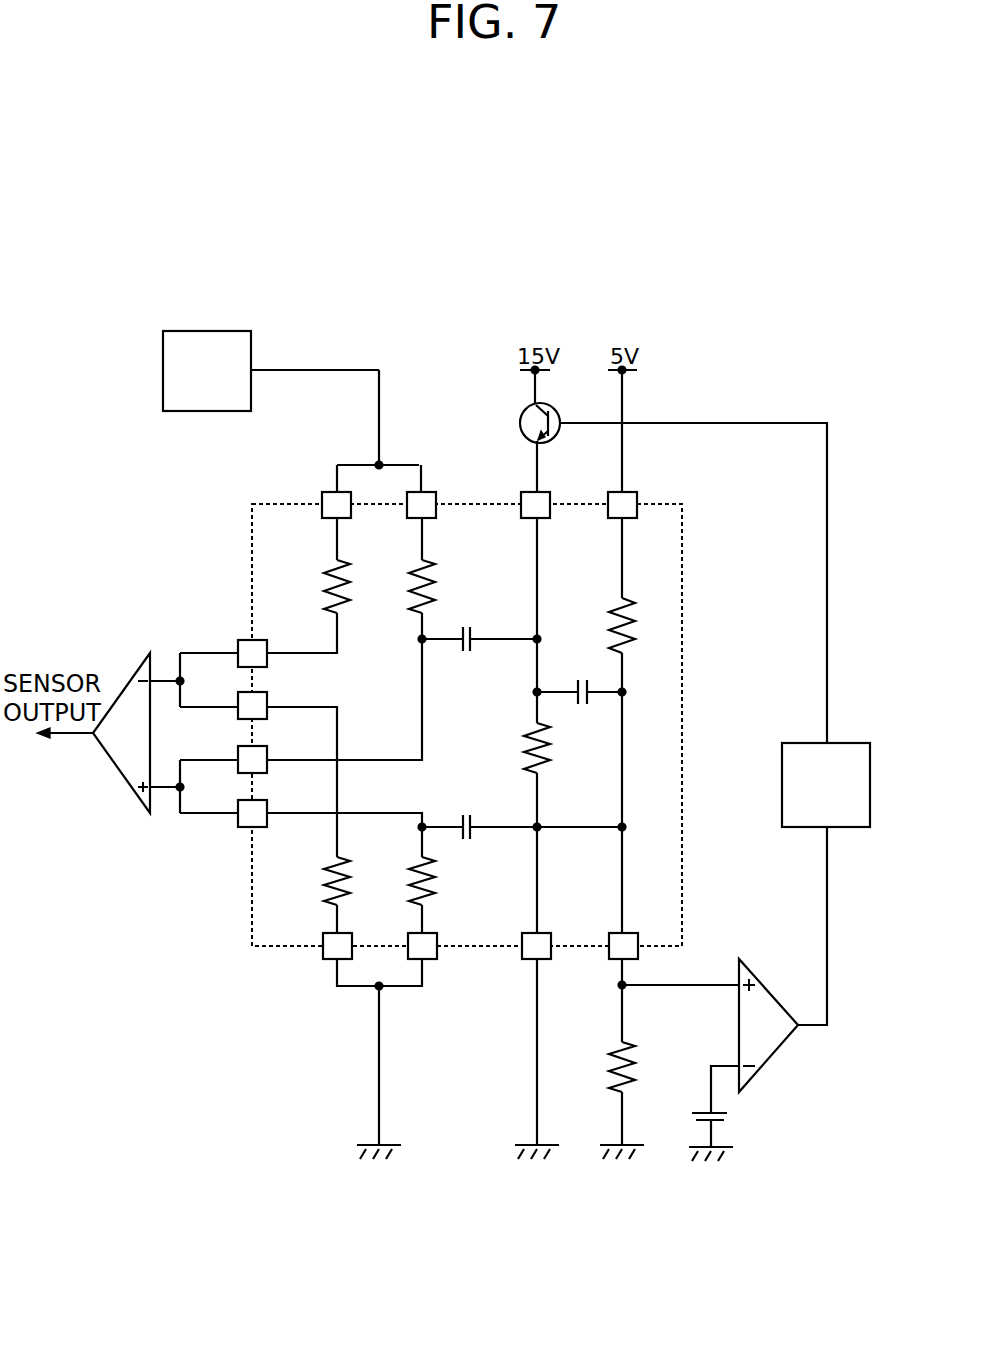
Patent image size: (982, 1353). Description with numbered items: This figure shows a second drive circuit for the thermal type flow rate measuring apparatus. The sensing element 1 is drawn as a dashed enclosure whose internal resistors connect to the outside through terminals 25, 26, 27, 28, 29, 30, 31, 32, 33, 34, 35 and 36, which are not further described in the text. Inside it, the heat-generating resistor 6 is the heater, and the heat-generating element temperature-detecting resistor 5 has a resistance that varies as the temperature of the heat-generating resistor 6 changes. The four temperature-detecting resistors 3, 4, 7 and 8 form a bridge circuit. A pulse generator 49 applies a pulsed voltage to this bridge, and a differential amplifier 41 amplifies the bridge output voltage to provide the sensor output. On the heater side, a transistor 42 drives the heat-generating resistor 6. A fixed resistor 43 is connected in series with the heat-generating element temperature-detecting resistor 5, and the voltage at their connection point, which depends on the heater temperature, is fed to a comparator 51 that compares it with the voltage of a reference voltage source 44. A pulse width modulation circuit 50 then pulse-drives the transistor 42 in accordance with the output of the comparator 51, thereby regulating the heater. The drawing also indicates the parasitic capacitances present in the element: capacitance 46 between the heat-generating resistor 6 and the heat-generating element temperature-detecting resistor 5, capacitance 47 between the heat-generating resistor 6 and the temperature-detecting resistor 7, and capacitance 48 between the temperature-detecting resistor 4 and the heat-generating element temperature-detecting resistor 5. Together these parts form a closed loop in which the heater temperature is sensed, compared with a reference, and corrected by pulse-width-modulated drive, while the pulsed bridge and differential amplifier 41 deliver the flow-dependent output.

The sensor chip 1 is at (273, 503).
The temperature-detecting resistor 3 is at (326, 590).
The temperature-detecting resistor 4 is at (410, 877).
The heat-generating element temperature-detecting resistor 5 is at (612, 622).
The heat-generating resistor 6 is at (525, 745).
The temperature-detecting resistor 7 is at (410, 588).
The temperature-detecting resistor 8 is at (325, 877).
The pad 25 is at (330, 491).
The pad 26 is at (267, 808).
The pad 27 is at (430, 960).
The pad 28 is at (240, 640).
The pad 29 is at (629, 491).
The pad 30 is at (614, 960).
The pad 31 is at (528, 960).
The pad 32 is at (525, 491).
The pad 33 is at (267, 702).
The pad 34 is at (426, 491).
The pad 35 is at (267, 755).
The pad 36 is at (328, 960).
The differential amplifier 41 is at (130, 683).
The transistor 42 is at (523, 412).
The fixed resistor 43 is at (611, 1068).
The reference voltage source 44 is at (727, 1118).
The capacitance 46 is at (582, 706).
The capacitance 47 is at (466, 626).
The capacitance 48 is at (466, 842).
The pulse generator 49 is at (163, 375).
The pulse width modulation circuit 50 is at (782, 782).
The comparator 51 is at (778, 1050).